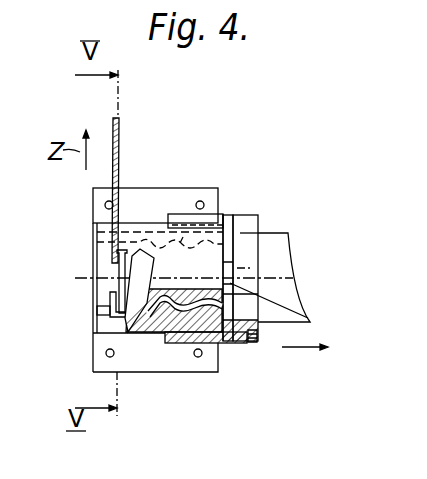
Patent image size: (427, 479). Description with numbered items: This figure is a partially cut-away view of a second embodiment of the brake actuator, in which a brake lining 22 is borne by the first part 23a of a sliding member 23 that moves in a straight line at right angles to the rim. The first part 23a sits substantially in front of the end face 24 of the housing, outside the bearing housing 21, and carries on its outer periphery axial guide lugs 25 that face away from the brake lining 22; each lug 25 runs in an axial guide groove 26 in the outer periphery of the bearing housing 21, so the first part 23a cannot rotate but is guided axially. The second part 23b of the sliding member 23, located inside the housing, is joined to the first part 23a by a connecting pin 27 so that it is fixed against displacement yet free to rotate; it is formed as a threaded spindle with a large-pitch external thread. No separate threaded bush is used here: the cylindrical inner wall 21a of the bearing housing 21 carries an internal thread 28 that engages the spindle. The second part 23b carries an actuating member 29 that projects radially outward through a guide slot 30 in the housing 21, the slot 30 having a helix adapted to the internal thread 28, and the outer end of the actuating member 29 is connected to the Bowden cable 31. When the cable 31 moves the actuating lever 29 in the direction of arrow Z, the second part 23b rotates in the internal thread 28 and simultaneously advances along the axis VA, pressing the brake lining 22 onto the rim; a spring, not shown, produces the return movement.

The bearing housing 21 is at (93, 248).
The cylindrical inner wall 21a is at (100, 307).
The brake lining 22 is at (283, 258).
The sliding member 23 is at (242, 213).
The first part of the sliding member 23a is at (245, 233).
The second part of the sliding member 23b is at (182, 243).
The end face of the housing 24 is at (229, 218).
The axial guide lugs 25 is at (178, 243).
The axial guide groove 26 is at (165, 225).
The connecting pin 27 is at (308, 318).
The internal thread 28 is at (153, 320).
The actuating member 29 is at (112, 272).
The guide slot 30 is at (112, 283).
The Bowden cable 31 is at (120, 123).
The axis VA is at (292, 287).